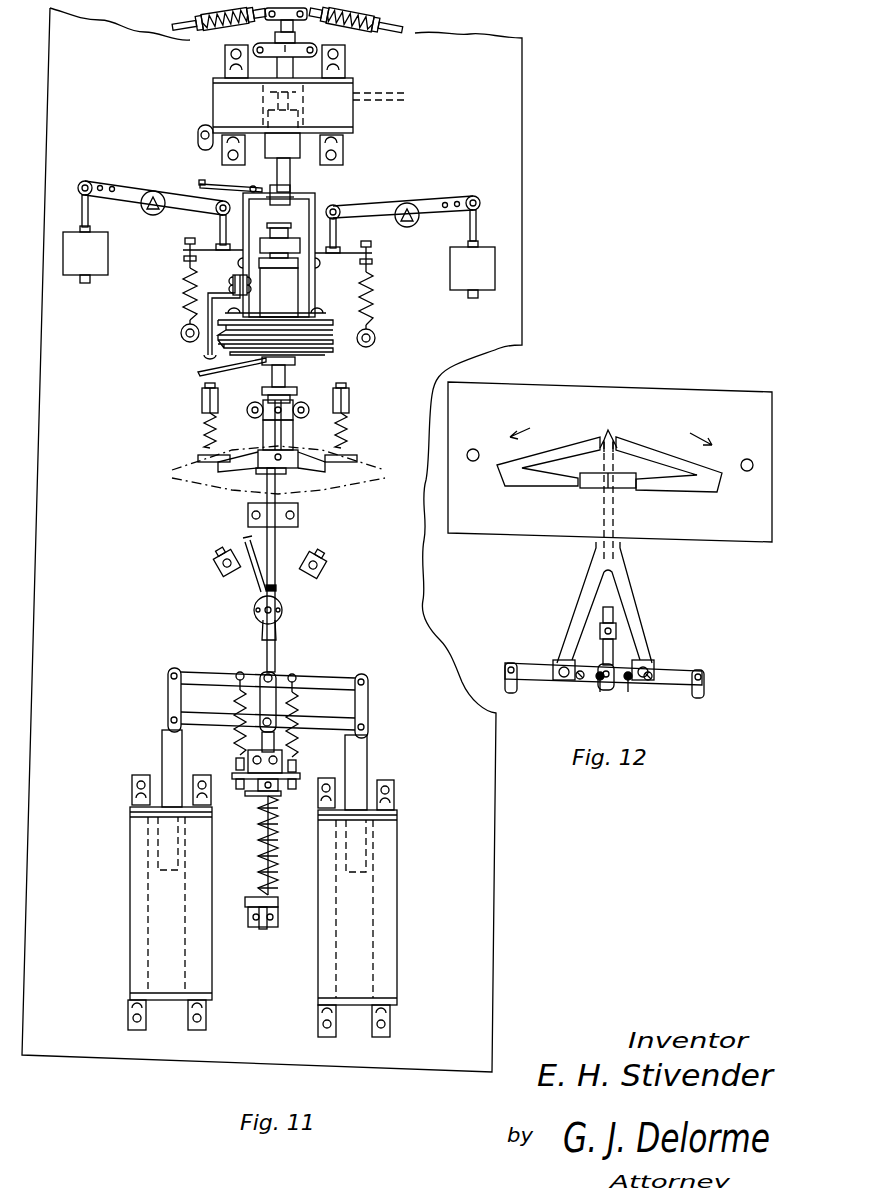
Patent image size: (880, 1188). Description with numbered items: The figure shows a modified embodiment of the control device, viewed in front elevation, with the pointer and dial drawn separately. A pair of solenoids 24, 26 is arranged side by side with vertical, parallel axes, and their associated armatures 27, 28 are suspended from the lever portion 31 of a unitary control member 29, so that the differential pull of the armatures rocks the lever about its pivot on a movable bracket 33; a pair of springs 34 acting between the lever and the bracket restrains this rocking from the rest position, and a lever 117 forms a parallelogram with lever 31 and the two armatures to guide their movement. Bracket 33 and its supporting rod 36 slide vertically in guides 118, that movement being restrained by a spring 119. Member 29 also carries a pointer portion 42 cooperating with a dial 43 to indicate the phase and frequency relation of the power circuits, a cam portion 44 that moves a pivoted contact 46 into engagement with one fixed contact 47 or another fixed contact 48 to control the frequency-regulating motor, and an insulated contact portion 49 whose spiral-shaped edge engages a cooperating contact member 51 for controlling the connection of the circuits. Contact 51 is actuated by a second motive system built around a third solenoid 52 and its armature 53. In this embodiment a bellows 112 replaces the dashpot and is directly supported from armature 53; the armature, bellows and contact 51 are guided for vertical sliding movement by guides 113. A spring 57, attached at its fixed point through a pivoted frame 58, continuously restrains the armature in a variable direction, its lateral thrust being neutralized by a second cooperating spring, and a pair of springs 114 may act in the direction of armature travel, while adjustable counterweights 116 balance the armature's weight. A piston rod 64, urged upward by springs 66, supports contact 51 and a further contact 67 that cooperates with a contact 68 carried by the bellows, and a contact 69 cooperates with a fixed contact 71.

In FIG. 11, the pivoted frame 58 is at (208, 12).
In FIG. 11, the spring 57 is at (222, 32).
In FIG. 11, the guides 113 is at (292, 50).
In FIG. 11, the third solenoid 52 is at (353, 125).
In FIG. 11, the fixed contact 71 is at (198, 145).
In FIG. 11, the armature 53 is at (296, 158).
In FIG. 11, the contact 69 is at (200, 186).
In FIG. 11, the adjustable counterweights 116 is at (108, 250).
In FIG. 11, the springs 114 is at (184, 300).
In FIG. 11, the contact 68 is at (204, 356).
In FIG. 11, the bellows 112 is at (326, 356).
In FIG. 11, the contact 67 is at (200, 374).
In FIG. 11, the springs 66 is at (204, 426).
In FIG. 11, the piston rod 64 is at (268, 436).
In FIG. 11, the contact member 51 is at (286, 436).
In FIG. 11, the contact portion 49 is at (322, 486).
In FIG. 11, the fixed contact 47 is at (218, 560).
In FIG. 11, the fixed contact 48 is at (322, 560).
In FIG. 11, the pivoted contact 46 is at (252, 582).
In FIG. 11, the unitary control member 29 is at (276, 590).
In FIG. 11, the movable bracket 33 is at (274, 680).
In FIG. 12, the movable bracket 33 is at (606, 692).
In FIG. 11, the lever portion 31 is at (328, 676).
In FIG. 12, the lever portion 31 is at (676, 674).
In FIG. 11, the lever 117 is at (330, 716).
In FIG. 11, the springs 34 is at (234, 740).
In FIG. 11, the armature 27 is at (162, 740).
In FIG. 11, the armature 28 is at (367, 752).
In FIG. 11, the guides 118 is at (282, 770).
In FIG. 11, the supporting rod 36 is at (274, 806).
In FIG. 11, the spring 119 is at (272, 858).
In FIG. 11, the solenoid 24 is at (130, 864).
In FIG. 11, the solenoid 26 is at (397, 882).
In FIG. 12, the dial 43 is at (555, 386).
In FIG. 12, the pointer portion 42 is at (640, 598).
In FIG. 12, the cam portion 44 is at (600, 630).